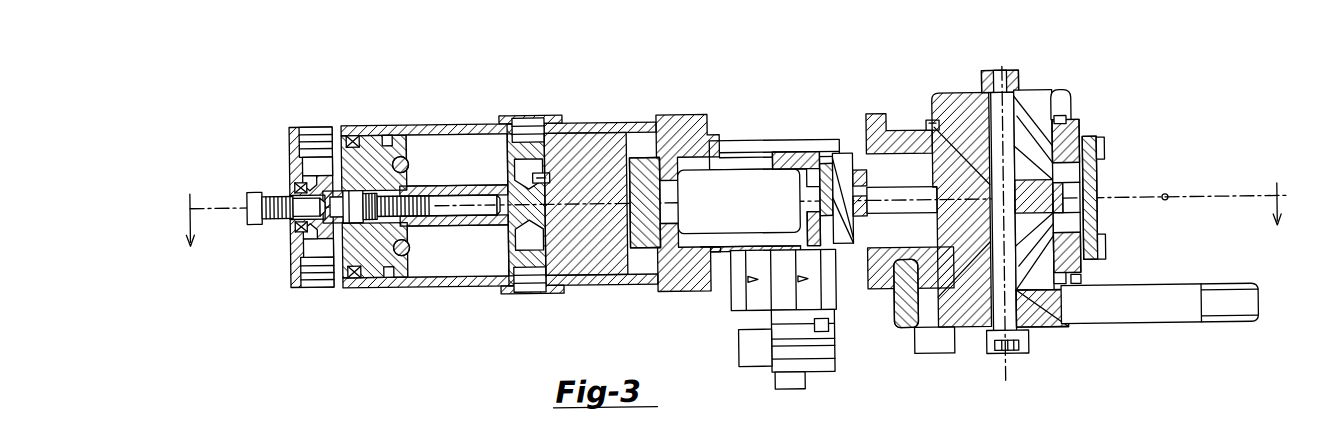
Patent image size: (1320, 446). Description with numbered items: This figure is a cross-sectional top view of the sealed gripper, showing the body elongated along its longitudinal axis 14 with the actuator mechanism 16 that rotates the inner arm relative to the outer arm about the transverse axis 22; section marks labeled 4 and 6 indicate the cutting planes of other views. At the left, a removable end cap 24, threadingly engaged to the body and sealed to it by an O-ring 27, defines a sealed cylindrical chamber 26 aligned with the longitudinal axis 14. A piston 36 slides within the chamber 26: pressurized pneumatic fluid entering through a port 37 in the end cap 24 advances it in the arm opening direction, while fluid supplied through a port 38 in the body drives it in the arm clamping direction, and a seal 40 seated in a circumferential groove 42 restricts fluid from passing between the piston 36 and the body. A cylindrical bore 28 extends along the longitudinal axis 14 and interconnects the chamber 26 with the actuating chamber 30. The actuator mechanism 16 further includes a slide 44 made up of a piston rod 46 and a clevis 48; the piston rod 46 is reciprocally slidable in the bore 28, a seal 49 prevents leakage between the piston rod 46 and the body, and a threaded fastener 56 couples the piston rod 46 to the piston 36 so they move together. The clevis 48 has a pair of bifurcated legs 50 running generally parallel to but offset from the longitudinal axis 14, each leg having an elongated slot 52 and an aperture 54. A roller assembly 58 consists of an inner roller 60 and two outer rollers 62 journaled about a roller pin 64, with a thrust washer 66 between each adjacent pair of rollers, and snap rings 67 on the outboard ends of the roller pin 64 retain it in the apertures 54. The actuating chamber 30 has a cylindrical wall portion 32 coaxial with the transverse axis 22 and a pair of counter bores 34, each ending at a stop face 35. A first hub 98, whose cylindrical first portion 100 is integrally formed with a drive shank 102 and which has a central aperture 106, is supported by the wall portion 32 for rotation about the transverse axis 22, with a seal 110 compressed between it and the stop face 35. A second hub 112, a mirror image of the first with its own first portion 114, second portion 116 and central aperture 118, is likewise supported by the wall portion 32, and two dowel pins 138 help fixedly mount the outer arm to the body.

The section line 4- 4 is at (727, 202).
The section line 6- 6 is at (1018, 256).
The longitudinal axis 14 is at (1165, 199).
The actuator mechanism 16 is at (445, 227).
The transverse axis 22 is at (1010, 371).
The removable end cap 24 is at (292, 130).
The sealed cylindrical chamber 26 is at (428, 138).
The O-ring 27 is at (353, 134).
The cylindrical bore 28 is at (458, 137).
The actuating chamber 30 is at (720, 182).
The cylindrical wall portion 32 is at (1043, 141).
The counter bore 34 is at (1073, 117).
The stop face 35 is at (1070, 108).
The piston 36 is at (373, 273).
The port 37 is at (310, 130).
The port 38 is at (537, 120).
The seal 40 is at (387, 131).
The circumferential groove 42 is at (401, 151).
The slide 44 is at (588, 232).
The piston rod 46 is at (483, 220).
The clevis 48 is at (677, 150).
The seal 49 is at (547, 173).
The bifurcated legs 50 is at (788, 156).
The elongated slot 52 is at (718, 140).
The aperture 54 is at (852, 155).
The threaded fastener 56 is at (370, 215).
The roller assembly 58 is at (870, 242).
The inner roller 60 is at (807, 192).
The outer rollers 62 is at (817, 174).
The roller pin 64 is at (880, 127).
The thrust washer 66 is at (869, 182).
The snap rings 67 is at (817, 269).
The first hub 98 is at (1040, 288).
The first portion 100 is at (1083, 280).
The drive shank 102 is at (1050, 244).
The central aperture 106 is at (1020, 290).
The seal 110 is at (1070, 297).
The second hub 112 is at (960, 123).
The first portion 114 is at (927, 122).
The second portion 116 is at (1077, 135).
The central aperture 118 is at (1008, 118).
The dowel pins 138 is at (900, 332).